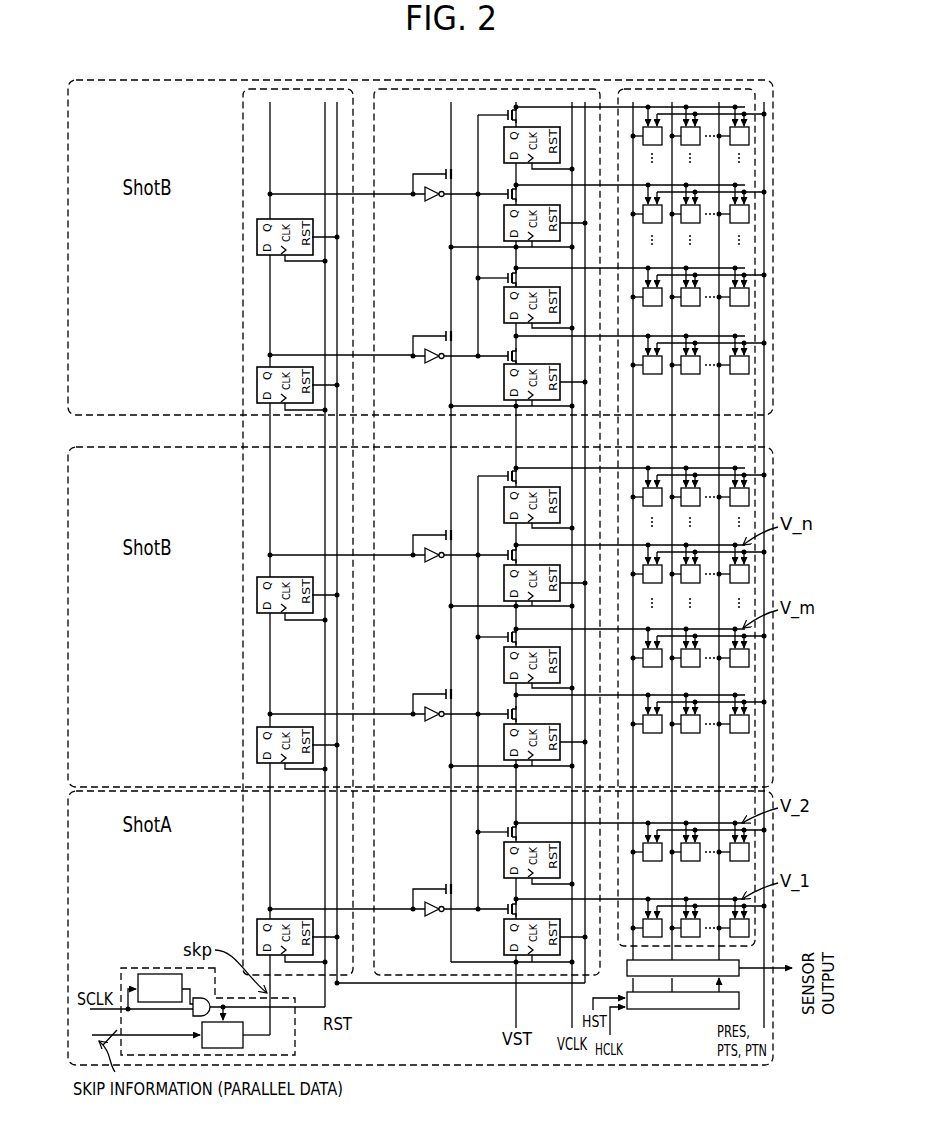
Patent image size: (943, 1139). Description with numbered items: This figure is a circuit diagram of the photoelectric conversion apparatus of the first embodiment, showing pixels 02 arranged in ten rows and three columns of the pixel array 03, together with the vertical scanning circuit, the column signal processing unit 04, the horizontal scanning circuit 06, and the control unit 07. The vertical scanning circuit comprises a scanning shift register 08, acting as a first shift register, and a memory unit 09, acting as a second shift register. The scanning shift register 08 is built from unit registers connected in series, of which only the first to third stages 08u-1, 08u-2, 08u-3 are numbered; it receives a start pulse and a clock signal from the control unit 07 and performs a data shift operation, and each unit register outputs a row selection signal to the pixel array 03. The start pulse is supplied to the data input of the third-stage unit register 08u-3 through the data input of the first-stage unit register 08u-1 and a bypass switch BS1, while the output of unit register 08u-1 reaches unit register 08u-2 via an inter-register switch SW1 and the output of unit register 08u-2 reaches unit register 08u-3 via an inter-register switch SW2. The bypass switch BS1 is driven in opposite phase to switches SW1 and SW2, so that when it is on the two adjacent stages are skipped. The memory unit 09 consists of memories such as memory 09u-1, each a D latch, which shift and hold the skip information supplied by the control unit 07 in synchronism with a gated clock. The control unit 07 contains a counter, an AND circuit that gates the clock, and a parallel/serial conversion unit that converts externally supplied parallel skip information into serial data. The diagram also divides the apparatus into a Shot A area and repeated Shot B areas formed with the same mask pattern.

The pixel 02 is at (751, 213).
The pixel array 03 is at (744, 88).
The column signal processing unit 04 is at (742, 957).
The horizontal scanning circuit 06 is at (672, 1012).
The control unit 07 is at (133, 966).
The scanning shift register 08 is at (522, 88).
The memory unit 09 is at (319, 88).
The unit register in the first stage 08u-1 is at (501, 947).
The unit register in the second stage 08u-2 is at (503, 858).
The unit register in the third stage 08u-3 is at (500, 750).
The memory 09u-1 is at (255, 924).
The inter-register switch SW1 is at (500, 913).
The inter-register switch SW2 is at (503, 830).
The bypass switch BS1 is at (435, 887).